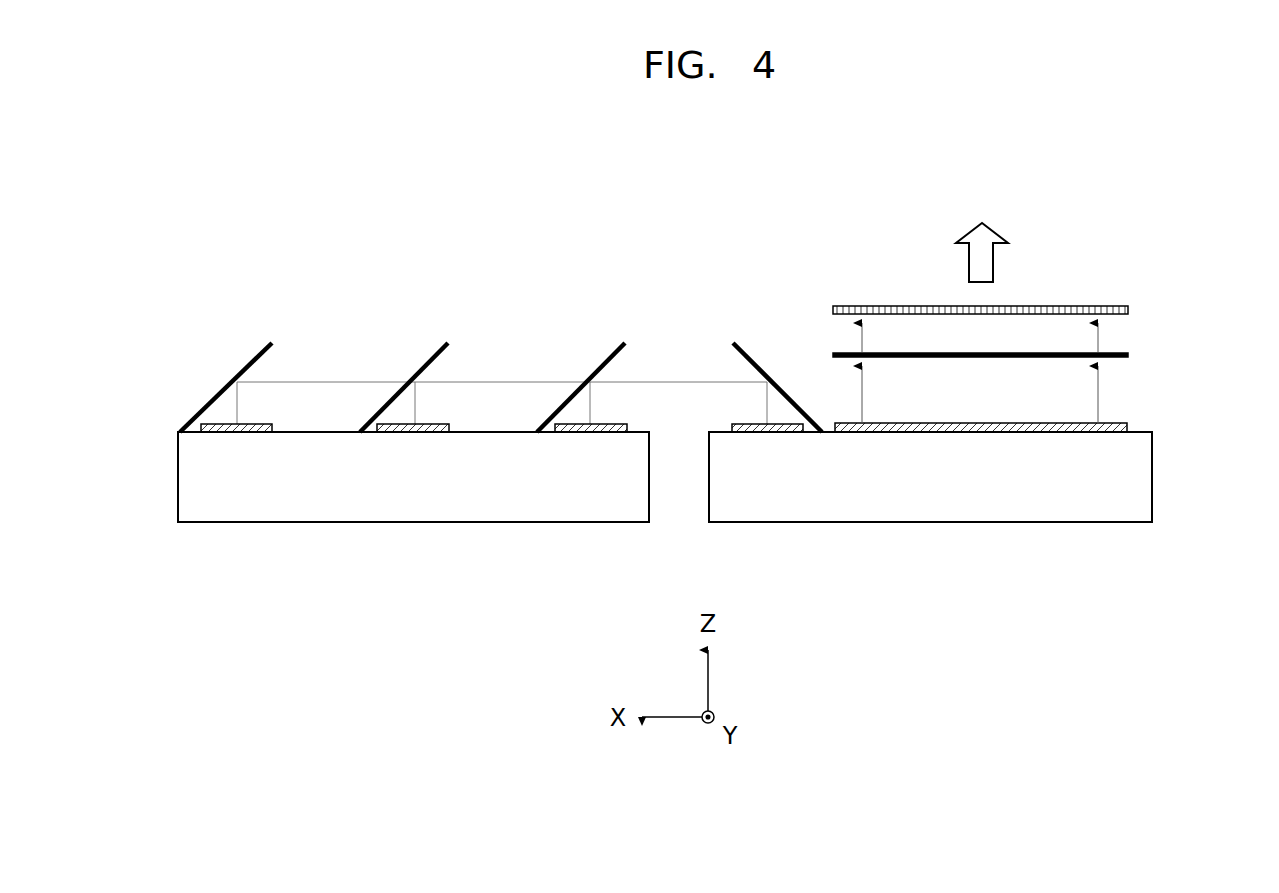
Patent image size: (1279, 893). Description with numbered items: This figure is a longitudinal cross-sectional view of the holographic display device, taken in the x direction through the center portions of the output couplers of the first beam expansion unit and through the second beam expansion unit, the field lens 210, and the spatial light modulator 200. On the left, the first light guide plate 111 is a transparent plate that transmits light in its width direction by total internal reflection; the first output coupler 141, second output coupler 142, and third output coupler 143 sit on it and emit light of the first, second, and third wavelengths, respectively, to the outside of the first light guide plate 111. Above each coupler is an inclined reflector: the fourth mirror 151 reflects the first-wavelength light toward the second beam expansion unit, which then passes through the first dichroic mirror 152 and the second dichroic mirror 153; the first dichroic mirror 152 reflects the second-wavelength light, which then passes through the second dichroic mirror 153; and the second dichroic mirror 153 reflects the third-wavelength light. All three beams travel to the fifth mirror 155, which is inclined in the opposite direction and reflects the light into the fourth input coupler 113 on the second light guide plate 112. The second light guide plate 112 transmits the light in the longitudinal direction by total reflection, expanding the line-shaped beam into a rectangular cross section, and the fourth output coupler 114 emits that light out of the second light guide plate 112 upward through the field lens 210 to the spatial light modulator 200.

The first light guide plate 111 is at (188, 475).
The second light guide plate 112 is at (1145, 477).
The fourth input coupler 113 is at (773, 432).
The fourth output coupler 114 is at (987, 427).
The first output coupler 141 is at (242, 432).
The second output coupler 142 is at (418, 432).
The third output coupler 143 is at (596, 432).
The fourth mirror 151 is at (253, 351).
The first dichroic mirror 152 is at (430, 351).
The second dichroic mirror 153 is at (610, 355).
The fifth mirror 155 is at (753, 357).
The spatial light modulator 200 is at (1128, 311).
The field lens 210 is at (1128, 355).